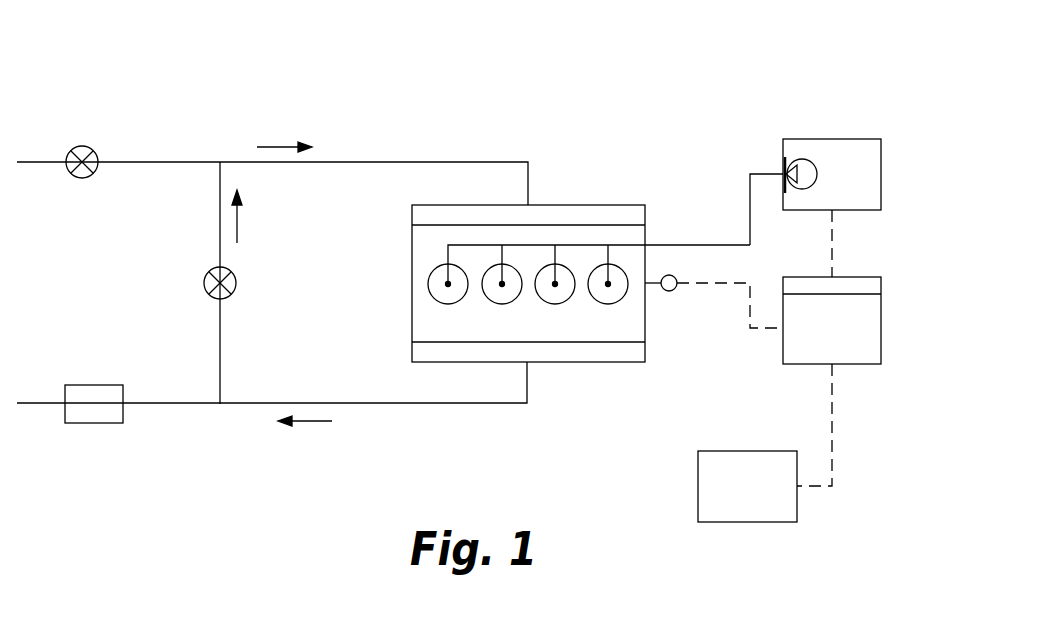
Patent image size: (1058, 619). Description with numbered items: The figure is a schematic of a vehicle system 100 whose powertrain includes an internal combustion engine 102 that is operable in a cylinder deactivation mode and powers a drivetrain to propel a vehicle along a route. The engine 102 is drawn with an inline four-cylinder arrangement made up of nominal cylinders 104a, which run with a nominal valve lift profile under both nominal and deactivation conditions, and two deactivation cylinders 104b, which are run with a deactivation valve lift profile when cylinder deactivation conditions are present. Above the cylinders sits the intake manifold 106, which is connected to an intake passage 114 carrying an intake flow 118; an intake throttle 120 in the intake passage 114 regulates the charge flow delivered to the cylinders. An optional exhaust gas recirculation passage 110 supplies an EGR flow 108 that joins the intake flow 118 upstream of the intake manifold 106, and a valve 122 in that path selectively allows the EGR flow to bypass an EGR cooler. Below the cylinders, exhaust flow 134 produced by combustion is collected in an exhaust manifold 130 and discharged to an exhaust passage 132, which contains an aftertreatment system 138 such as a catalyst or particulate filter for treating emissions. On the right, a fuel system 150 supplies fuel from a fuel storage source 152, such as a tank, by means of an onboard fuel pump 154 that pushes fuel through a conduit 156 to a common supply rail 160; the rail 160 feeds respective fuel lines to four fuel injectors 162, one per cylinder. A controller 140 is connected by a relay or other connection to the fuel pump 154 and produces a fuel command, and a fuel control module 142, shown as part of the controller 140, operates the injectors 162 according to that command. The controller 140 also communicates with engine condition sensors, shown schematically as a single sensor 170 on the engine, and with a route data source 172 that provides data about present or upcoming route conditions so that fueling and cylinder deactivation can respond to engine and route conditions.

The vehicle system 100 is at (143, 40).
The internal combustion engine 102 is at (396, 316).
The nominal cylinders 104a is at (430, 283).
The deactivation cylinders 104b is at (552, 300).
The intake manifold 106 is at (549, 214).
The EGR flow 108 is at (238, 222).
The EGR passage 110 is at (220, 204).
The intake passage 114 is at (380, 162).
The intake flow 118 is at (270, 145).
The intake throttle 120 is at (88, 146).
The valve 122 is at (204, 279).
The exhaust manifold 130 is at (587, 355).
The exhaust passage 132 is at (390, 404).
The exhaust flow 134 is at (313, 426).
The aftertreatment system 138 is at (112, 418).
The controller 140 is at (850, 343).
The fuel control module 142 is at (845, 284).
The fuel system 150 is at (731, 103).
The fuel storage source 152 is at (862, 139).
The fuel pump 154 is at (802, 159).
The conduit 156 is at (672, 243).
The common supply rail 160 is at (478, 244).
The fuel injectors 162 is at (590, 278).
The sensor 170 is at (675, 278).
The route data source 172 is at (768, 500).